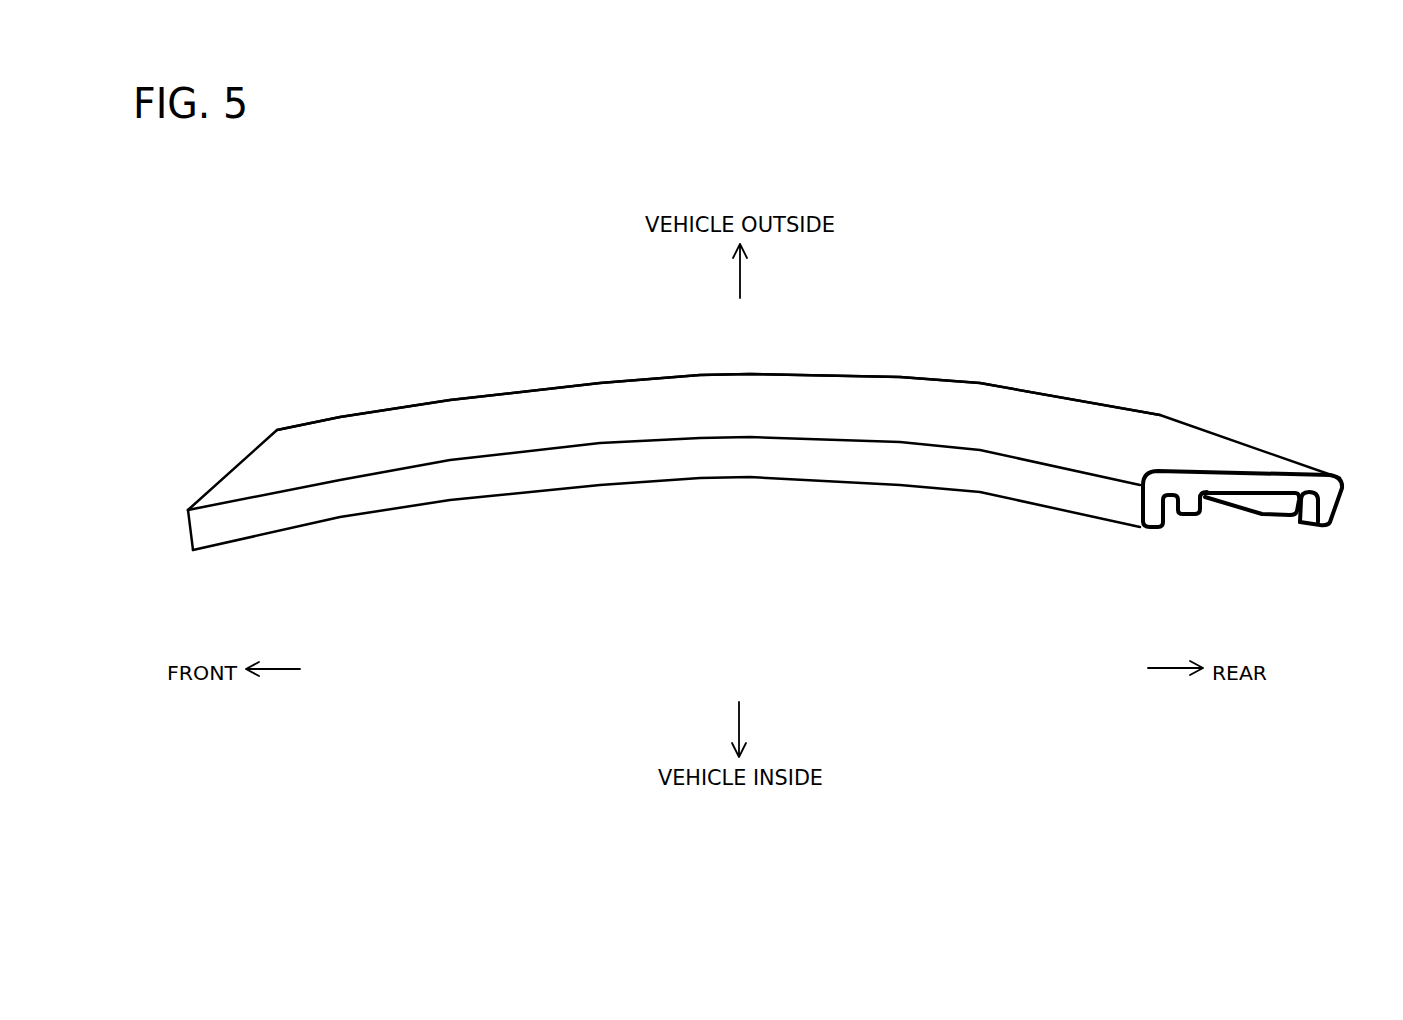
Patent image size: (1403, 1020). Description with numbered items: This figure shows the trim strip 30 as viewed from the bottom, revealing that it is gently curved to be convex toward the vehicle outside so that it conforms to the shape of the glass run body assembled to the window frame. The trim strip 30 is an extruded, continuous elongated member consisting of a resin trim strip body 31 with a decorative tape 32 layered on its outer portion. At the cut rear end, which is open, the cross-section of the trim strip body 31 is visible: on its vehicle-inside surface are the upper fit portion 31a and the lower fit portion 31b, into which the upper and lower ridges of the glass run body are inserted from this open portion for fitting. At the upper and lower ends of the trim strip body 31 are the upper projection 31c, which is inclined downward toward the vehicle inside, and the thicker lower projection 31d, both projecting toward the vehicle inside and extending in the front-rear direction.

The trim strip 30 is at (1088, 365).
The trim strip body 31 is at (1228, 488).
The decorative tape 32 is at (1175, 437).
The upper fit portion 31a is at (1278, 522).
The lower fit portion 31b is at (1208, 521).
The upper projection 31c is at (1322, 527).
The lower projection 31d is at (1147, 530).